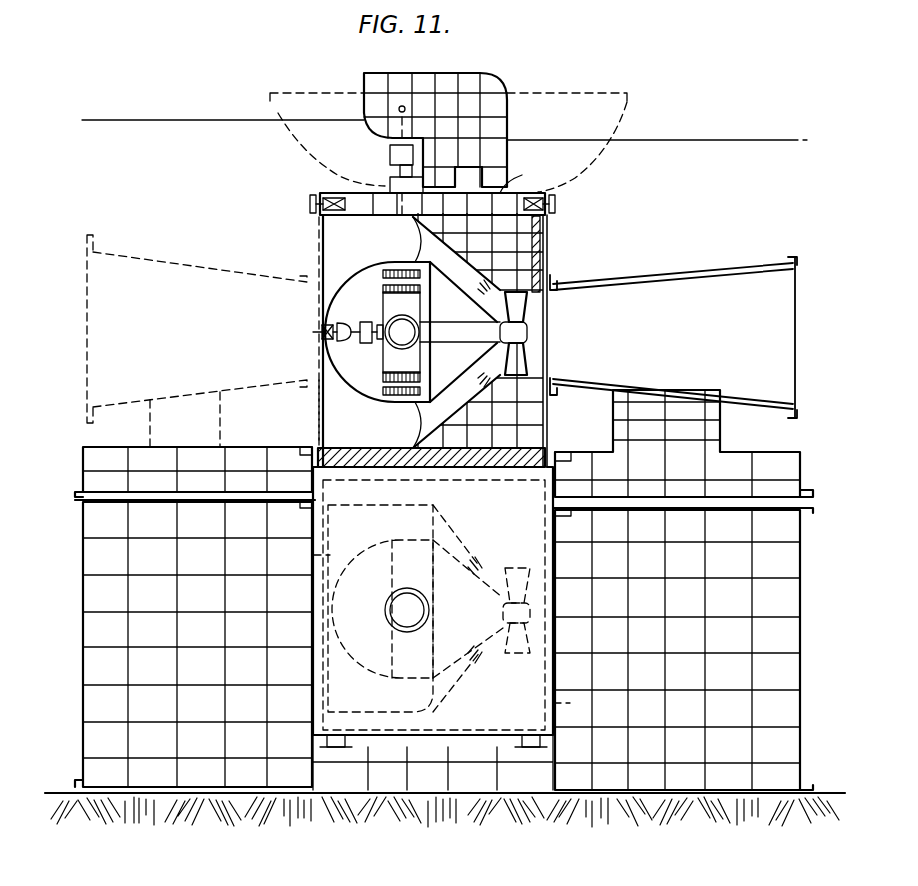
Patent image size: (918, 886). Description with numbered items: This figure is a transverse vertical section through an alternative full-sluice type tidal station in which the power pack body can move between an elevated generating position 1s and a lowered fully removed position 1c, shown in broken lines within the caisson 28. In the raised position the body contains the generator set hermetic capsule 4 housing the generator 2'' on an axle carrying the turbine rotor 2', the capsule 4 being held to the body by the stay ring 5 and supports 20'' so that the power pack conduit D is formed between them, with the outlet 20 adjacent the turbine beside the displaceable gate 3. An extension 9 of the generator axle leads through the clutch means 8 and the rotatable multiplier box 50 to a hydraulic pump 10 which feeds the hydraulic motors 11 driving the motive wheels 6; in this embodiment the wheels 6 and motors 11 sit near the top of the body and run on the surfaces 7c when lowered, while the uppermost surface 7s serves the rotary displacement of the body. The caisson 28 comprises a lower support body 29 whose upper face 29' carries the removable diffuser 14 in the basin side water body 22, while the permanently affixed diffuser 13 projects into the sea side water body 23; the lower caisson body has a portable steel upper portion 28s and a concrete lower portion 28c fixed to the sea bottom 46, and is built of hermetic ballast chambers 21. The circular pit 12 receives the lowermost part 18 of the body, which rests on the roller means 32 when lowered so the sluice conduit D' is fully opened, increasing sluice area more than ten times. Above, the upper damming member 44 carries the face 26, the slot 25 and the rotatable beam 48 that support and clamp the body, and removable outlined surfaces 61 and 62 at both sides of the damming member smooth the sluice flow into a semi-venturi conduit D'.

The elevated generating position 1s is at (318, 252).
The lowered fully removed position 1c is at (550, 558).
The turbine rotor 2' is at (513, 333).
The generator 2'' is at (398, 473).
The displaceable gate 3 is at (541, 250).
The generator set hermetic capsule 4 is at (378, 270).
The stay ring 5 is at (457, 271).
The wheels 6 is at (310, 204).
The uppermost surface 7s is at (300, 456).
The lower running surfaces 7c is at (303, 508).
The clutch means 8 is at (350, 341).
The axle extension 9 is at (332, 323).
The hydraulic pump 10 is at (320, 337).
The hydraulic motors 11 is at (333, 196).
The circular pit 12 is at (313, 558).
The permanently affixed diffuser 13 is at (670, 347).
The removable diffuser 14 is at (177, 342).
The lowermost part of power pack body 18 is at (458, 733).
The outlet 20 is at (572, 341).
The supports 20'' is at (298, 412).
The chambers 21 is at (137, 545).
The basin side water body 22 is at (178, 116).
The sea side water body 23 is at (682, 135).
The slot 25 is at (472, 176).
The face 26 is at (400, 165).
The caisson 28 is at (436, 116).
The upper portion of lower caisson body 28s is at (186, 472).
The lower portion of lower caisson body 28c is at (186, 634).
The lower support body 29 is at (445, 819).
The upper face of caisson lower body 29' is at (205, 419).
The roller means 32 is at (337, 748).
The upper damming member 44 is at (490, 73).
The sea bottom 46 is at (763, 805).
The rotatable beam 48 is at (390, 152).
The rotatable multiplier box 50 is at (367, 320).
The outlined surface 61 is at (317, 92).
The outlined surface 62 is at (293, 137).
The power pack conduit D is at (431, 441).
The sluice-type conduit D' is at (523, 178).